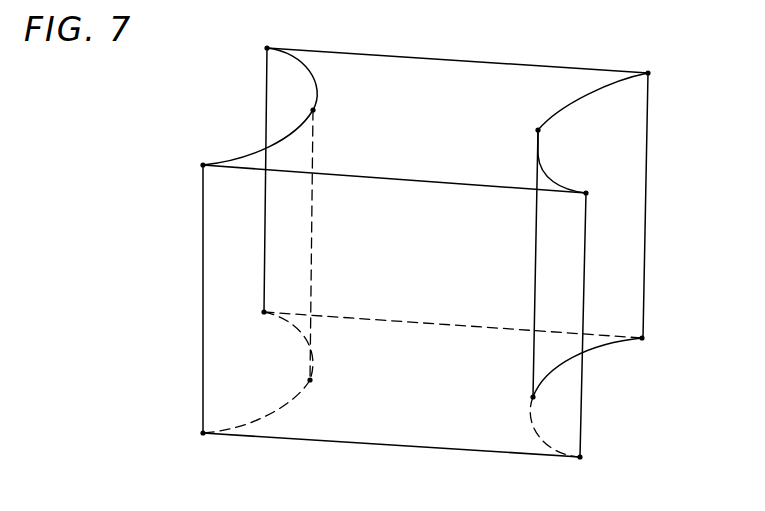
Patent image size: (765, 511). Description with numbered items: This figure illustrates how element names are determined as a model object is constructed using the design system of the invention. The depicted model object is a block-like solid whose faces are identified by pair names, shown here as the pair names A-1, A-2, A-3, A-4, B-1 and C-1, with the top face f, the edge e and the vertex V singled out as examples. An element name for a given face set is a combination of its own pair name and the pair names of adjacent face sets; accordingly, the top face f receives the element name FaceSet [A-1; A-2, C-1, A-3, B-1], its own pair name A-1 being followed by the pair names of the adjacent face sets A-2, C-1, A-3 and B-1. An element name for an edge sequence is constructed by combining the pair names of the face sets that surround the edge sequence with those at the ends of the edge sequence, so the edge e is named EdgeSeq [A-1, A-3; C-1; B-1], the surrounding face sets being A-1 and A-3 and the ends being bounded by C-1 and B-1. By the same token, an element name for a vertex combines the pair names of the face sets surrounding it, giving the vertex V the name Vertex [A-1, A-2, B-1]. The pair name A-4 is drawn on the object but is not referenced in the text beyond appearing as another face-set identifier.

The pair name A-1 is at (378, 82).
The pair name A-2 is at (515, 100).
The pair name A-3 is at (438, 418).
The fourth face of block A-4 is at (362, 410).
The pair name B-1 is at (627, 147).
The pair name C-1 is at (285, 98).
The vertex V is at (653, 62).
The edge e is at (415, 184).
The top face f is at (421, 118).